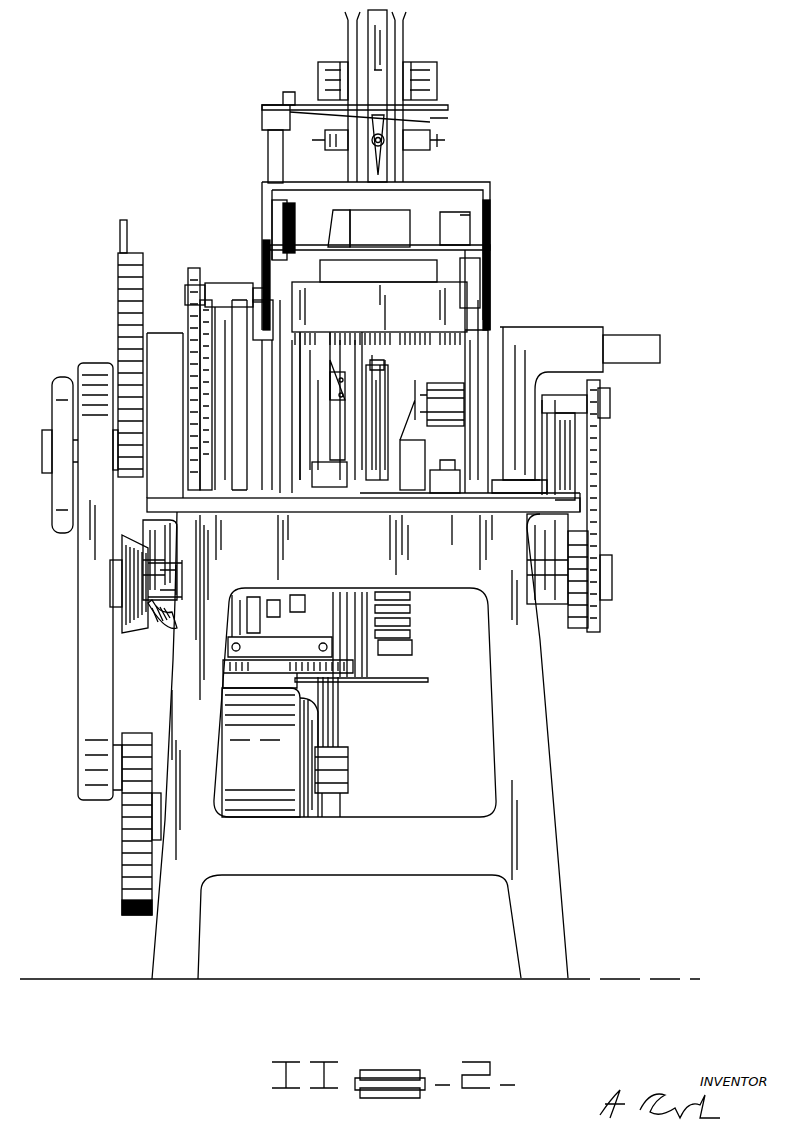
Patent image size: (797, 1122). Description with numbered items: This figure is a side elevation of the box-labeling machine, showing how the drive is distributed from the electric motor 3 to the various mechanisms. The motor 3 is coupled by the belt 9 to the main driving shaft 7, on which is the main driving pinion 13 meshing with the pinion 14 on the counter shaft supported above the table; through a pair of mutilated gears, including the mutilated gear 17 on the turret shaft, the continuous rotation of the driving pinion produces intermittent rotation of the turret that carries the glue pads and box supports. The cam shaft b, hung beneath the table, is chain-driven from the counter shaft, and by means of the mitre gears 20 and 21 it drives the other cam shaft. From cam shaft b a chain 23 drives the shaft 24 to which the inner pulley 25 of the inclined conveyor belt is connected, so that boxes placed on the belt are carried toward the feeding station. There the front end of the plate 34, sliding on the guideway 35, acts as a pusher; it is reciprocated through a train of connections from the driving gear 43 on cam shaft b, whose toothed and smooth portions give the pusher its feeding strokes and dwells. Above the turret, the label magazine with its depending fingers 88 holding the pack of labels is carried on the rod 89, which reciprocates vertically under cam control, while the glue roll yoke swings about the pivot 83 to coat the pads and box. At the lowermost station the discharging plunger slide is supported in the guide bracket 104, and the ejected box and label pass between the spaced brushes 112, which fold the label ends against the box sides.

The electric motor 3 is at (261, 752).
The main driving shaft 7 is at (42, 452).
The belt 9 is at (100, 645).
The main driving pinion 13 is at (210, 452).
The pinion 14 is at (213, 284).
The mutilated gear 17 is at (130, 305).
The mitre gear 20 is at (137, 540).
The mitre gear 21 is at (155, 625).
The chain 23 is at (588, 432).
The shaft 24 is at (566, 398).
The inner pulley 25 is at (458, 405).
The plate 34 is at (625, 350).
The guideway 35 is at (582, 344).
The driving gear 43 is at (580, 557).
The pivot 83 is at (379, 313).
The depending fingers 88 is at (348, 155).
The rod 89 is at (270, 150).
The guide bracket 104 is at (445, 485).
The brushes 112 is at (405, 616).
The cam shaft b is at (576, 580).